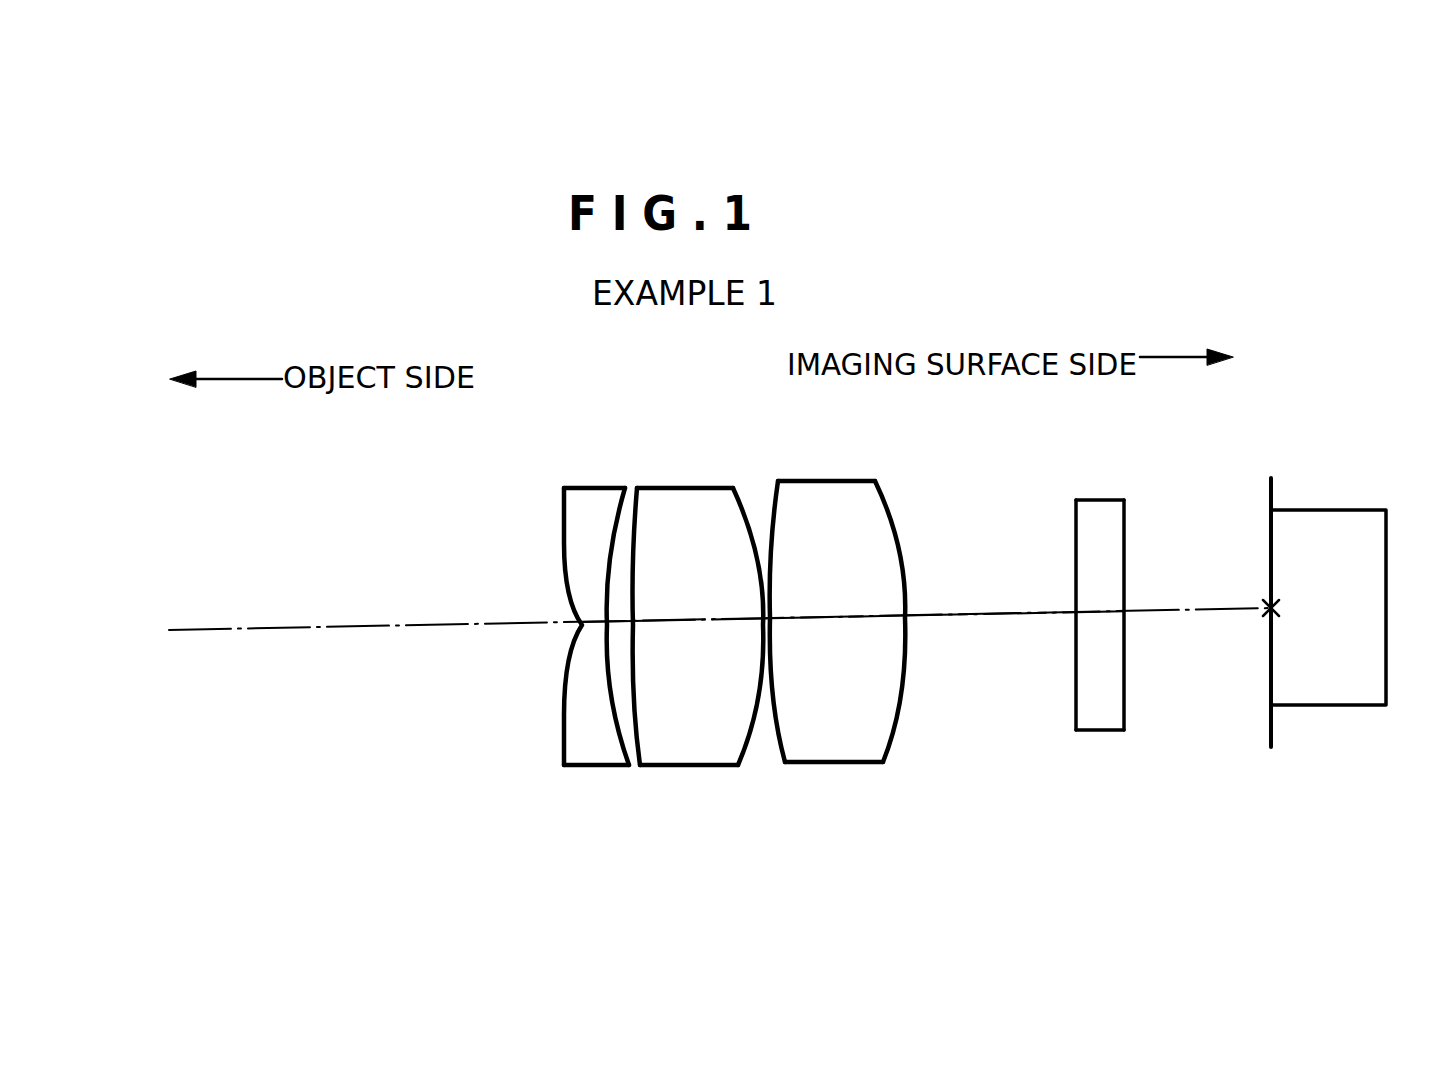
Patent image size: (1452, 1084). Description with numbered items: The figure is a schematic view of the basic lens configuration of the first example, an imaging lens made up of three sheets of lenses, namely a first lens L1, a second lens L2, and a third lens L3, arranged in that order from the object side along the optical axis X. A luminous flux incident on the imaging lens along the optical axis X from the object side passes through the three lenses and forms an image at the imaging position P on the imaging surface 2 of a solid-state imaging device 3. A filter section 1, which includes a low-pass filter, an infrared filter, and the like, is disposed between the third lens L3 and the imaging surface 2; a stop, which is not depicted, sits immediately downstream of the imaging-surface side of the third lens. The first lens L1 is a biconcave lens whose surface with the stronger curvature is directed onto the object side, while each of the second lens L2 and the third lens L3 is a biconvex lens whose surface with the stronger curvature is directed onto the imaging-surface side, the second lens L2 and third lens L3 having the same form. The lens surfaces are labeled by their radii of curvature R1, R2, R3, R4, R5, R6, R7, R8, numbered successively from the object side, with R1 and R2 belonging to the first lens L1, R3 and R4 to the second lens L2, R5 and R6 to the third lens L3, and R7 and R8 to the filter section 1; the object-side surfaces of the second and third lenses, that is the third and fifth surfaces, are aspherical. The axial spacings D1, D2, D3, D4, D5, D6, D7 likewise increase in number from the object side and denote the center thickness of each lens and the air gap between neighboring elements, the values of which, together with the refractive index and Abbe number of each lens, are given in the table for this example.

The filter section 1 is at (1101, 624).
The imaging surface 2 is at (1271, 732).
The solid-state imaging device 3 is at (1388, 533).
The imaging position P is at (1283, 611).
The optical axis X is at (330, 633).
The first lens L1 is at (562, 627).
The second lens L2 is at (697, 623).
The third lens L3 is at (856, 628).
The radius of curvature of first surface R1 is at (567, 554).
The radius of curvature of second surface R2 is at (618, 526).
The radius of curvature of third surface R3 is at (633, 510).
The radius of curvature of fourth surface R4 is at (750, 493).
The radius of curvature of fifth surface R5 is at (772, 494).
The radius of curvature of sixth surface R6 is at (884, 491).
The radius of curvature of seventh surface R7 is at (1073, 512).
The radius of curvature of eighth surface R8 is at (1126, 509).
The center thickness or air gap D1 is at (592, 618).
The center thickness or air gap D2 is at (620, 616).
The center thickness or air gap D3 is at (688, 619).
The center thickness or air gap D4 is at (772, 604).
The center thickness or air gap D5 is at (840, 619).
The center thickness or air gap D6 is at (985, 612).
The center thickness or air gap D7 is at (1106, 616).